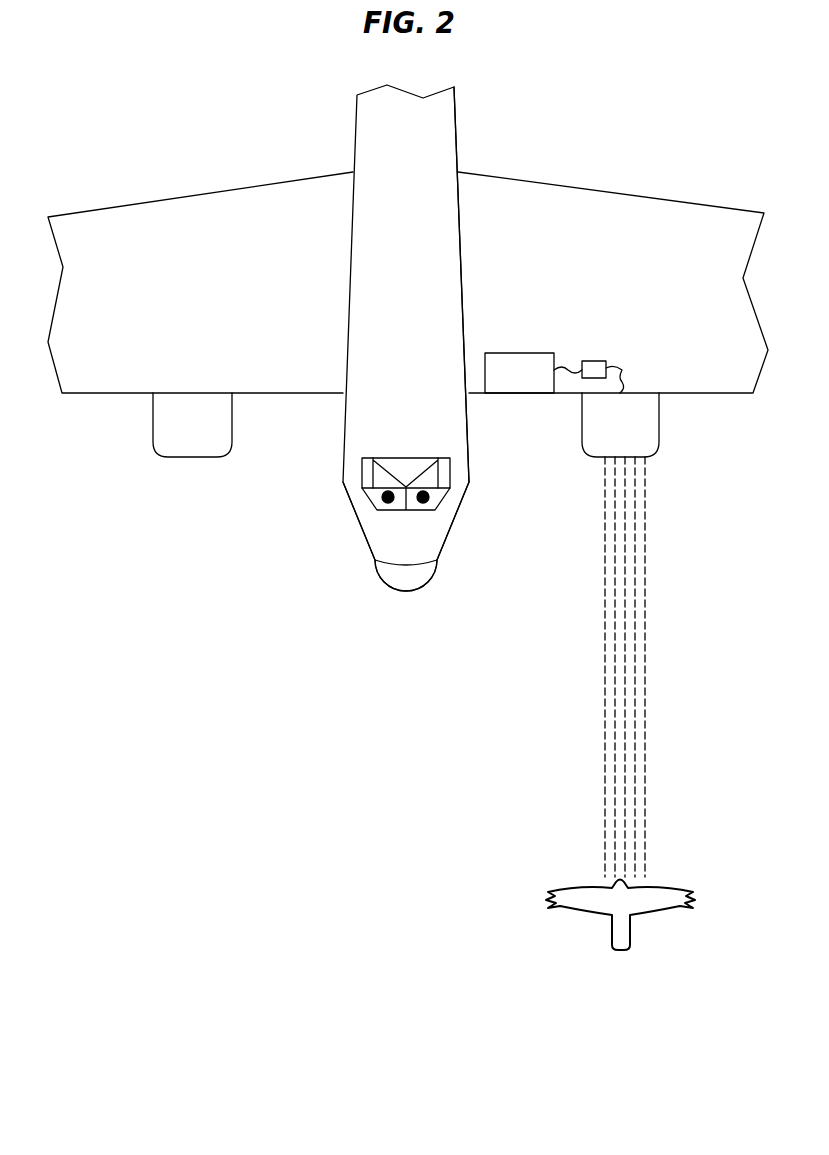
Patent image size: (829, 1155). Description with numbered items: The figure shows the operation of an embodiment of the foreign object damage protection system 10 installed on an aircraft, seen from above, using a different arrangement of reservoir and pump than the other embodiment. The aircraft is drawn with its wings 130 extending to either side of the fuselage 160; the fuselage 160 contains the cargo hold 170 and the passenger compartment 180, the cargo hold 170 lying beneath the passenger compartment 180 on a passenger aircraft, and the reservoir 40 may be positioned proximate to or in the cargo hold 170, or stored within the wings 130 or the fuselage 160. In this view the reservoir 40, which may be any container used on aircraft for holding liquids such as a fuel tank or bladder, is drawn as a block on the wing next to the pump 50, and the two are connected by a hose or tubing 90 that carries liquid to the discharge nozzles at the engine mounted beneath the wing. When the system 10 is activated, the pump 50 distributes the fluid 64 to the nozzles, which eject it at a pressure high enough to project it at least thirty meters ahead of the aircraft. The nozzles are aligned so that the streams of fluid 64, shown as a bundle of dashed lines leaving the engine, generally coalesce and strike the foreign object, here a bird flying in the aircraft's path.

The foreign object damage protection system 10 is at (543, 402).
The reservoir 40 is at (517, 353).
The pump 50 is at (593, 361).
The fluid 64 is at (655, 620).
The hose or tubing 90 is at (626, 364).
The wings 130 is at (664, 210).
The fuselage 160 is at (447, 148).
The cargo hold 170 is at (356, 150).
The passenger compartment 180 is at (363, 404).